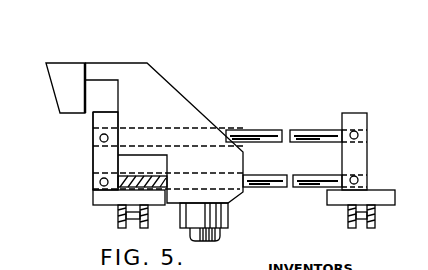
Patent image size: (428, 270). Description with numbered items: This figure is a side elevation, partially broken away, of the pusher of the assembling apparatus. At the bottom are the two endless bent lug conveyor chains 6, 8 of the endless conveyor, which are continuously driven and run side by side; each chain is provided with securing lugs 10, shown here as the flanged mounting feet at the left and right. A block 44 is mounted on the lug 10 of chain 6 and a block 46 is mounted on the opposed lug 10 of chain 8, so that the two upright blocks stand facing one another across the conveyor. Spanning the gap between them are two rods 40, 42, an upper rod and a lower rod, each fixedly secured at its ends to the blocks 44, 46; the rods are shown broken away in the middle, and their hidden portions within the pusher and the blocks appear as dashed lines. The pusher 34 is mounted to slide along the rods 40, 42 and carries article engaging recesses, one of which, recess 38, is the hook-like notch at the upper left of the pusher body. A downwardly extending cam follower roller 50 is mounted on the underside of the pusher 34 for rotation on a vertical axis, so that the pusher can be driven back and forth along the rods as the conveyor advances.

The endless bent lug conveyor chain 6 is at (147, 218).
The endless bent lug conveyor chain 8 is at (350, 225).
The securing lug 10 is at (111, 206).
The pusher 34 is at (165, 88).
The article engaging recess 38 is at (72, 72).
The rod 40 is at (252, 130).
The rod 42 is at (257, 187).
The block 44 is at (103, 160).
The block 46 is at (357, 162).
The cam follower roller 50 is at (228, 216).